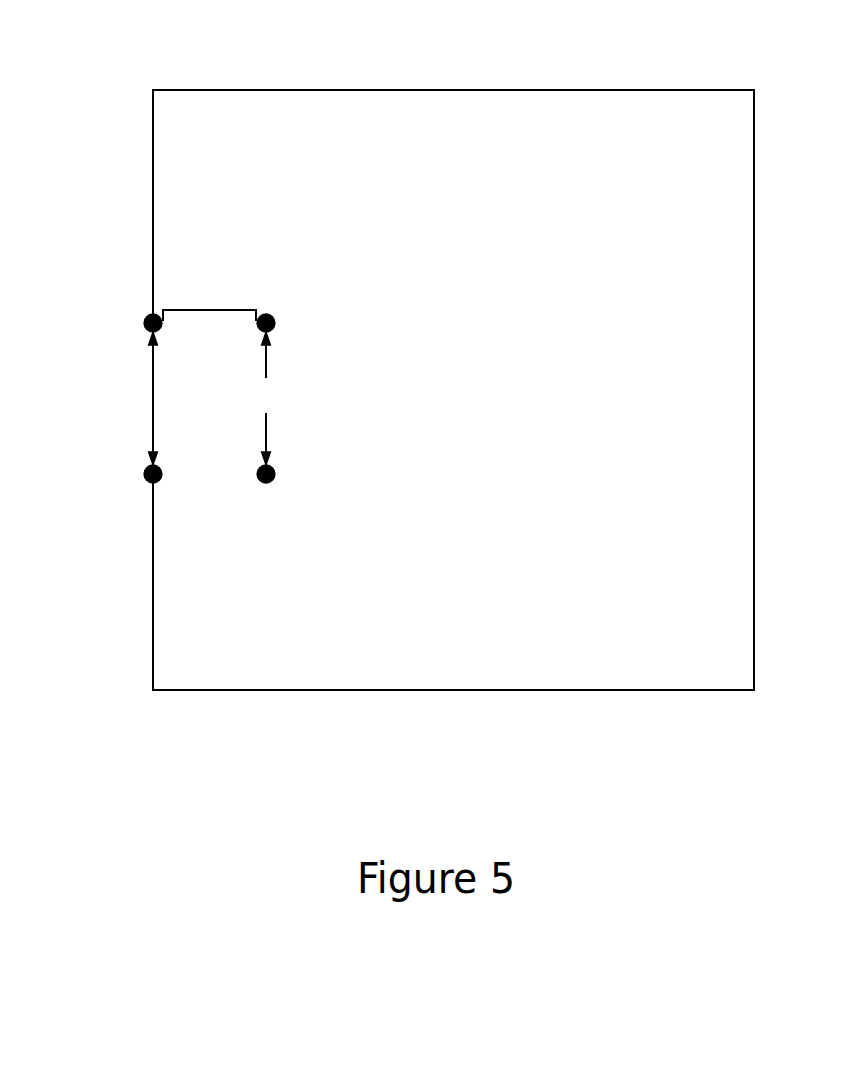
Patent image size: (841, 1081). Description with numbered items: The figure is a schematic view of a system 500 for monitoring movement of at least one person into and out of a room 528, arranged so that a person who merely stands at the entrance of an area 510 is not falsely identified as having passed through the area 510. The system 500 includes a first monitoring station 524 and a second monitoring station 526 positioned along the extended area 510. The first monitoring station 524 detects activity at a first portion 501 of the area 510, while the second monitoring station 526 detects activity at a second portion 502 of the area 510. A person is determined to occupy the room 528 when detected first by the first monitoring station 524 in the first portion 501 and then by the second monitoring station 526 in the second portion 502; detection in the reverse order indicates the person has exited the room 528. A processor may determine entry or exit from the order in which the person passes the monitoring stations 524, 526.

The system 500 is at (71, 225).
The first portion 501 is at (153, 398).
The second portion 502 is at (266, 398).
The area 510 is at (209, 298).
The first monitoring station 524 is at (100, 370).
The second monitoring station 526 is at (309, 365).
The room 528 is at (520, 89).